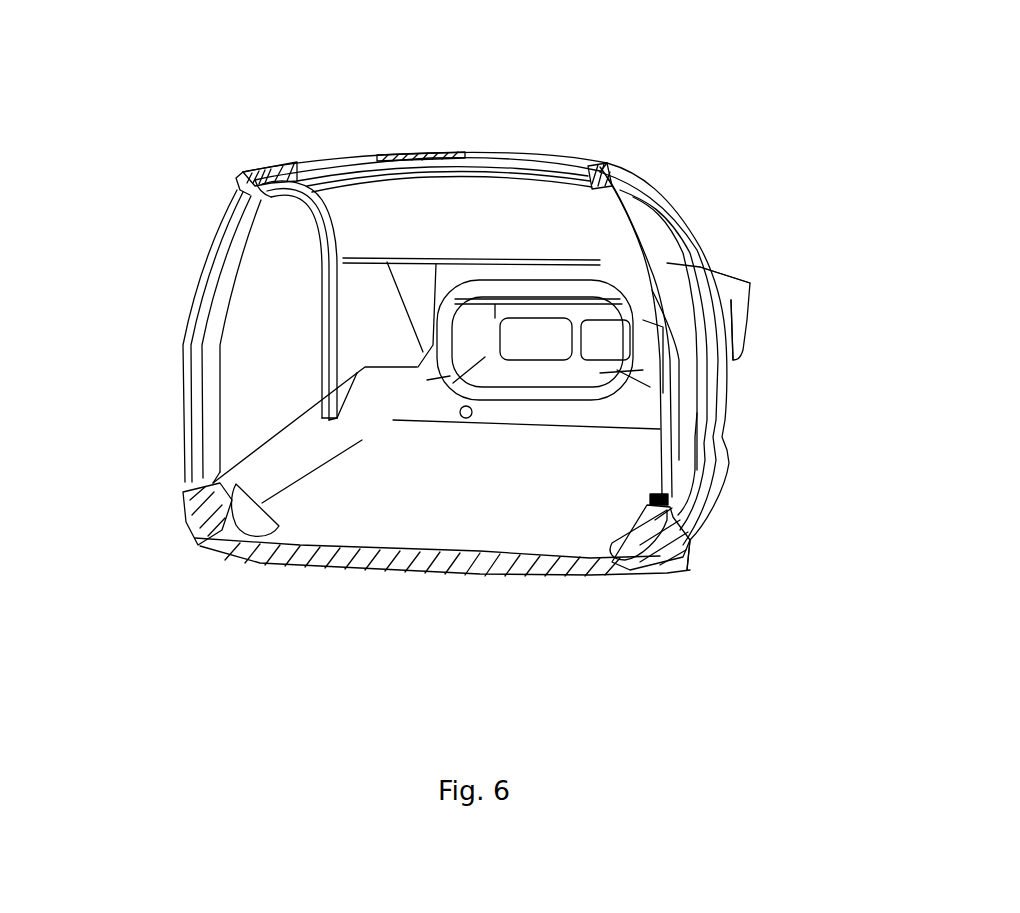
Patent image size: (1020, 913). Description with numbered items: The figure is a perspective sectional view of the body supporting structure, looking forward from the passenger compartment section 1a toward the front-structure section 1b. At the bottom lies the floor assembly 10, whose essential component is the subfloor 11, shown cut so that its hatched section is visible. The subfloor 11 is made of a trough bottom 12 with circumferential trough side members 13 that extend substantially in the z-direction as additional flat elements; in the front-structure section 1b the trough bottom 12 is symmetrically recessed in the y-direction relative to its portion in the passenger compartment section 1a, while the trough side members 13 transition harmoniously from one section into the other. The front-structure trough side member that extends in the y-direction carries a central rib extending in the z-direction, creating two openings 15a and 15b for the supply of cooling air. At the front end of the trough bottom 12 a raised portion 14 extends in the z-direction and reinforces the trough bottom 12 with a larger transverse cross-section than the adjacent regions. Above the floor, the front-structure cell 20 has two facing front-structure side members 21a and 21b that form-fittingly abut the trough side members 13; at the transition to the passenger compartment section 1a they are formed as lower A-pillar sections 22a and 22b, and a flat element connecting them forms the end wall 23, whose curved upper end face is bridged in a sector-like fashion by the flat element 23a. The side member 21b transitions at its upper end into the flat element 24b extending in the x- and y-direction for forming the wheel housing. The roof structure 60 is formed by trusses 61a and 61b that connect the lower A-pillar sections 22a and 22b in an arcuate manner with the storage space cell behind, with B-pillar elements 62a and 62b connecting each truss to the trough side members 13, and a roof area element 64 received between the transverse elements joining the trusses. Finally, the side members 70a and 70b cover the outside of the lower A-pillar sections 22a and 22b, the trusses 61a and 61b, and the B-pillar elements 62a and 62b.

The passenger compartment section 1a is at (745, 500).
The front-structure section 1b is at (676, 126).
The floor assembly 10 is at (298, 566).
The subfloor 11 is at (399, 575).
The trough bottom 12 is at (572, 388).
The trough side members 13 is at (560, 338).
The raised portion 14 is at (522, 400).
The opening 15a is at (549, 354).
The opening 15b is at (624, 355).
The front-structure cell 20 is at (725, 270).
The front-structure side member 21a is at (366, 291).
The front-structure side member 21b is at (695, 293).
The lower A-pillar section 22a is at (352, 358).
The lower A-pillar section 22b is at (703, 383).
The end wall 23 is at (447, 274).
The flat element 23a is at (512, 278).
The flat element 24b is at (725, 272).
The roof structure 60 is at (500, 150).
The truss 61a is at (244, 172).
The truss 61b is at (596, 163).
The B-pillar element 62a is at (212, 403).
The B-pillar element 62b is at (670, 447).
The roof area element 64 is at (428, 152).
The side member 70a is at (184, 346).
The side member 70b is at (690, 507).